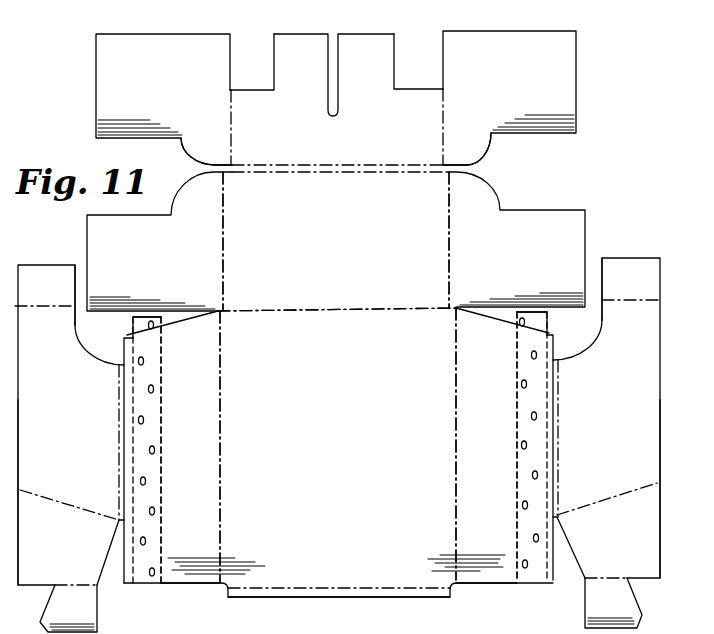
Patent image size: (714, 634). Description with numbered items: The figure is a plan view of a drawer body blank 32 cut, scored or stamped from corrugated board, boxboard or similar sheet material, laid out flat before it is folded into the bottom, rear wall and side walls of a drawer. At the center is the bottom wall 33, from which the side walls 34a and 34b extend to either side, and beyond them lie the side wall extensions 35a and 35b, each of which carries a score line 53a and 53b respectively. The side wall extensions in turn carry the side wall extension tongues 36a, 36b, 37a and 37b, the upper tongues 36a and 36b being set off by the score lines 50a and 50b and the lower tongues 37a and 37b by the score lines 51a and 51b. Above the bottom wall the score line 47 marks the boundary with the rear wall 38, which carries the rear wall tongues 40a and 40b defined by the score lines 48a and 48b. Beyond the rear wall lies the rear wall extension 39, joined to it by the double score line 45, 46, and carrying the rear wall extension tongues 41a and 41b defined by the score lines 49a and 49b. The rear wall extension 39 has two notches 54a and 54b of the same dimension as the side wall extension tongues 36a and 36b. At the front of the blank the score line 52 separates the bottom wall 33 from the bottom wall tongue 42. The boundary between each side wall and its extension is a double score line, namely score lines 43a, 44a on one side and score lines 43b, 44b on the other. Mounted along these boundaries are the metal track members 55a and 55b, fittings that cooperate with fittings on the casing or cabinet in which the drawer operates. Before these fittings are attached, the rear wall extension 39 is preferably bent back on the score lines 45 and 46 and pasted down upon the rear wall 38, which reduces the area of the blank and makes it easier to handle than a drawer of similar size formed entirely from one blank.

The drawer body blank 32 is at (337, 309).
The bottom wall 33 is at (338, 452).
The side wall 34a is at (472, 445).
The side wall 34b is at (213, 447).
The side wall extension 35a is at (626, 486).
The side wall extension 35b is at (47, 492).
The side wall extension tongue 36a is at (606, 418).
The side wall extension tongue 36b is at (71, 425).
The side wall extension tongue 37a is at (613, 603).
The side wall extension tongue 37b is at (68, 608).
The rear wall 38 is at (336, 241).
The rear wall extension 39 is at (337, 99).
The rear wall tongue 40a is at (517, 239).
The rear wall tongue 40b is at (159, 241).
The rear wall extension tongue 41a is at (509, 98).
The rear wall extension tongue 41b is at (164, 99).
The bottom wall tongue 42 is at (361, 592).
The score line 43a is at (560, 437).
The score line 43b is at (121, 443).
The score line 44a is at (552, 458).
The score line 44b is at (127, 468).
The score line 45 is at (276, 165).
The score line 46 is at (292, 173).
The score line 47 is at (297, 311).
The score line 48a is at (449, 252).
The score line 48b is at (224, 273).
The score line 49a is at (445, 135).
The score line 49b is at (230, 117).
The score line 50a is at (631, 294).
The score line 50b is at (41, 308).
The score line 51a is at (594, 576).
The score line 51b is at (74, 582).
The score line 52 is at (279, 586).
The score line 53a is at (607, 502).
The score line 53b is at (82, 507).
The notch 54a is at (418, 61).
The notch 54b is at (252, 62).
The metal track member 55a is at (548, 325).
The metal track member 55b is at (131, 327).